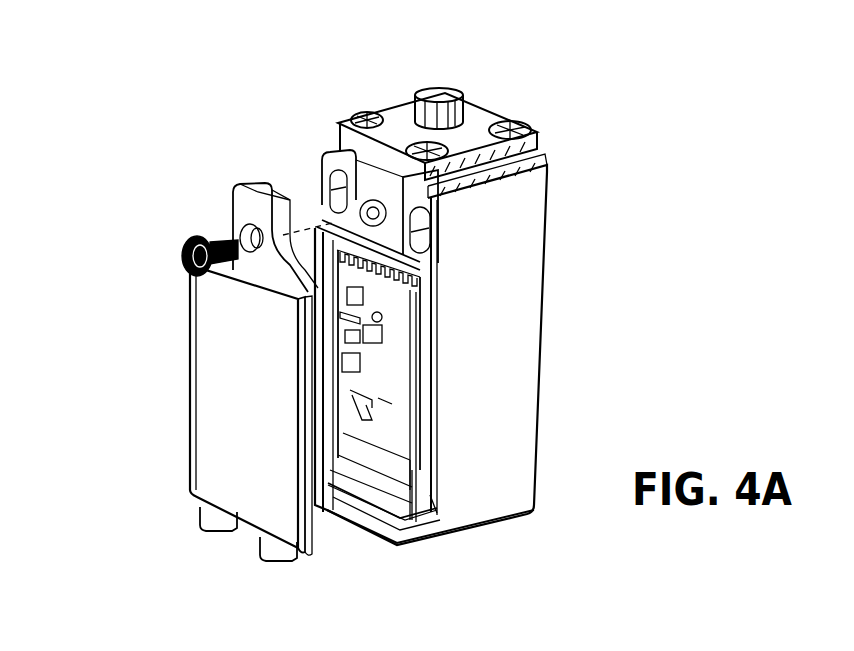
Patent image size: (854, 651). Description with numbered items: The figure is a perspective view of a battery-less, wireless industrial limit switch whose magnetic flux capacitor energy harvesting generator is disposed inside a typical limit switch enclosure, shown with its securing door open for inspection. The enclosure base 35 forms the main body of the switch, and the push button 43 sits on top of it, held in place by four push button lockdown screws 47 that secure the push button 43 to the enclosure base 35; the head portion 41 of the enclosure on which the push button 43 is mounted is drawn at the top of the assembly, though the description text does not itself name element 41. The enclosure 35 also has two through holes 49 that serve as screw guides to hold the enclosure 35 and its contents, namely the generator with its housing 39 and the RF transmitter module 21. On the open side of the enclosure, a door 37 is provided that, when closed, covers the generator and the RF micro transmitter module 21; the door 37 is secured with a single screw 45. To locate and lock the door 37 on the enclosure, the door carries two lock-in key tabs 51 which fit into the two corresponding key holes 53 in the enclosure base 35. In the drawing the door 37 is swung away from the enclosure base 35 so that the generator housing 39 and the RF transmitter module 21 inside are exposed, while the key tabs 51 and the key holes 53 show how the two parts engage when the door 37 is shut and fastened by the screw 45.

The RF transmitter module 21 is at (400, 330).
The enclosure base 35 is at (503, 400).
The door 37 is at (222, 406).
The generator housing 39 is at (363, 443).
The head 41 is at (400, 120).
The push button 43 is at (445, 94).
The screw 45 is at (183, 250).
The push button lockdown screws 47 is at (350, 113).
The through holes 49 is at (321, 170).
The lock-in key tabs 51 is at (203, 510).
The key holes 53 is at (335, 523).